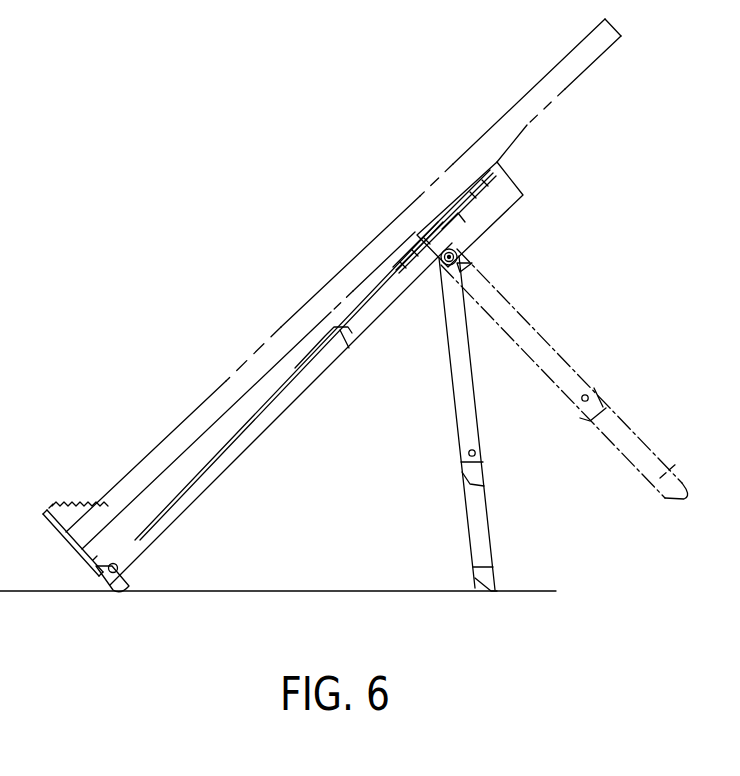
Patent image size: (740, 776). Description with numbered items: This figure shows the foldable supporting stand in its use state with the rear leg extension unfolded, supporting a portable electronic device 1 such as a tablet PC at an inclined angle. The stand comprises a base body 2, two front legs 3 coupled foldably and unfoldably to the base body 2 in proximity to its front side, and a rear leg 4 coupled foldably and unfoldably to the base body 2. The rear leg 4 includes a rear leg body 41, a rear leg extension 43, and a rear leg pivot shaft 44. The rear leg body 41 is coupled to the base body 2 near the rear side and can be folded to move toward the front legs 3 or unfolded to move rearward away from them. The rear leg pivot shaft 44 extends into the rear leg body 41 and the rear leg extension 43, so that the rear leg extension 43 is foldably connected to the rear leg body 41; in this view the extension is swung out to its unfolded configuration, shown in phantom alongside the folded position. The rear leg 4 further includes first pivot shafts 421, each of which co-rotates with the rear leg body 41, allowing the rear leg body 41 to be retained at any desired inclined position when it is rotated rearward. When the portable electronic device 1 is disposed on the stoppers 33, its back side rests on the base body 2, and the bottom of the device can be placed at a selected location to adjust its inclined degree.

The portable electronic device 1 is at (410, 205).
The base body 2 is at (510, 184).
The front leg 3 is at (327, 380).
The stopper 33 is at (73, 543).
The rear leg 4 is at (563, 420).
The rear leg body 41 is at (463, 382).
The first pivot shaft 421 is at (458, 254).
The rear leg extension 43 is at (483, 531).
The rear leg pivot shaft 44 is at (477, 455).